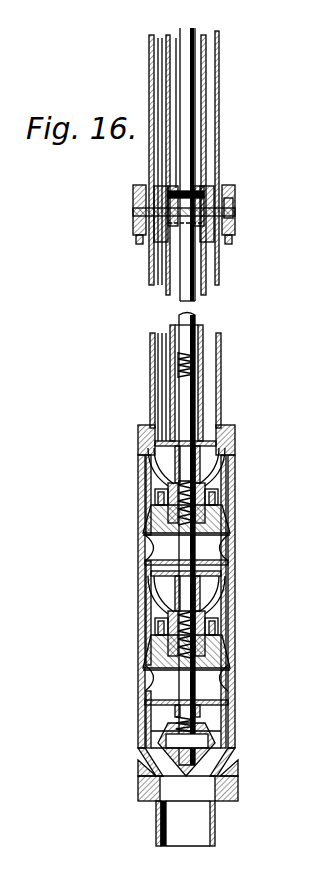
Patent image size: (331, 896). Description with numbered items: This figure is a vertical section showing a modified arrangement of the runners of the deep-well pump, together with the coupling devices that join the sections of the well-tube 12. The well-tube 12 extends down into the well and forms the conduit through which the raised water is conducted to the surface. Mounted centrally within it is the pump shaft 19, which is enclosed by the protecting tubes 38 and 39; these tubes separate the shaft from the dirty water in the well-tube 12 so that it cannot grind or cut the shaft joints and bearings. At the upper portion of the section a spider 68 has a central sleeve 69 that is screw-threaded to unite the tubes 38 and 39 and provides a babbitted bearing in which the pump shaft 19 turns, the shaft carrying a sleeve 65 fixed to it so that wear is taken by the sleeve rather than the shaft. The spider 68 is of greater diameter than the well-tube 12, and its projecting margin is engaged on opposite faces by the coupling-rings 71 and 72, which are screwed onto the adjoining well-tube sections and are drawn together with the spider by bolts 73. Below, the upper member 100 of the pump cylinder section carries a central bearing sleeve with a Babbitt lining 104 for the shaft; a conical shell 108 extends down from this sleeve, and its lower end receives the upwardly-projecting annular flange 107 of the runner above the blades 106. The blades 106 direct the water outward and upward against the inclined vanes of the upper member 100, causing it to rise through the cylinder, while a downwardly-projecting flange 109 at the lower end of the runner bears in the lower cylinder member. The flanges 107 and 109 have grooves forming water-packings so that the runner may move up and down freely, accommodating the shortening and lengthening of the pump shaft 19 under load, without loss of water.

The well-tube 12 is at (211, 140).
The pump shaft 19 is at (178, 101).
The tube 38 is at (195, 122).
The tube 39 is at (162, 250).
The sleeve 65 is at (192, 185).
The spider 68 is at (124, 204).
The central sleeve 69 is at (160, 183).
The coupling-ring 71 is at (239, 196).
The coupling-ring 72 is at (127, 218).
The bolts 73 is at (125, 192).
The upper member of the pump cylinder section 100 is at (228, 462).
The lining 104 is at (184, 430).
The blades 106 is at (148, 508).
The upwardly-projecting annular flange 107 is at (143, 492).
The conical shell 108 is at (205, 472).
The downwardly-projecting flange 109 is at (203, 540).